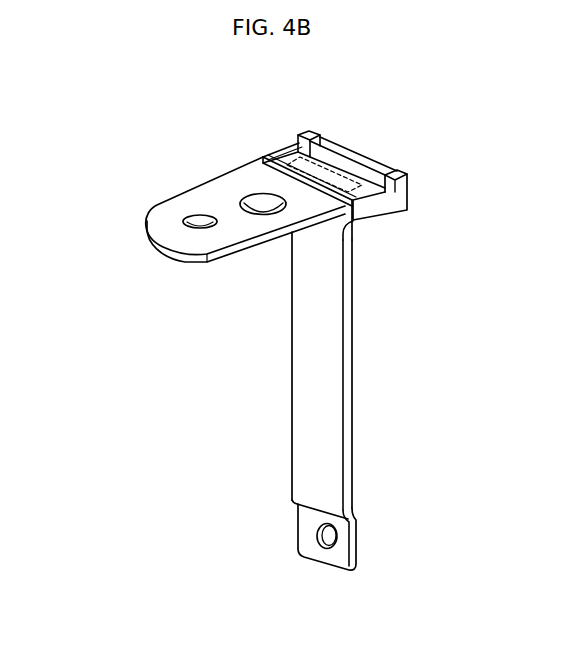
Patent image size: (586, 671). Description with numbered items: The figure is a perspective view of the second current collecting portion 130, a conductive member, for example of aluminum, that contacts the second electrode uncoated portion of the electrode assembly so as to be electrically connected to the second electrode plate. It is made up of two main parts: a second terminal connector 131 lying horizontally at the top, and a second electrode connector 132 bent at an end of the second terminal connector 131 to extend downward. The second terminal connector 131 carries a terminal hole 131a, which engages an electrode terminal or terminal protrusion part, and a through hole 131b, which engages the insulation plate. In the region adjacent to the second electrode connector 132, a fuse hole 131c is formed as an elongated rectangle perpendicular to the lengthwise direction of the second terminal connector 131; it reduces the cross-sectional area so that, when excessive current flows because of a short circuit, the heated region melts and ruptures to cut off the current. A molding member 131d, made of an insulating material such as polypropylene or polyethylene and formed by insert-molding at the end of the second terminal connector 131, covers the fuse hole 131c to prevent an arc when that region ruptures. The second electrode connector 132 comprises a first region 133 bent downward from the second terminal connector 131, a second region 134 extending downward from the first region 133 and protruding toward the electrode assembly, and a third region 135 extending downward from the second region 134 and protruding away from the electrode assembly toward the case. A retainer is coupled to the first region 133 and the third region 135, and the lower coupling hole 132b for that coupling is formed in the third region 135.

The second current collecting portion 130 is at (73, 110).
The second terminal connector 131 is at (168, 209).
The terminal hole 131a is at (259, 198).
The through hole 131b is at (202, 221).
The fuse hole 131c is at (318, 177).
The molding member 131d is at (405, 189).
The second electrode connector 132 is at (430, 274).
The lower coupling hole 132b is at (318, 535).
The first region 133 is at (348, 226).
The second region 134 is at (340, 382).
The third region 135 is at (348, 542).